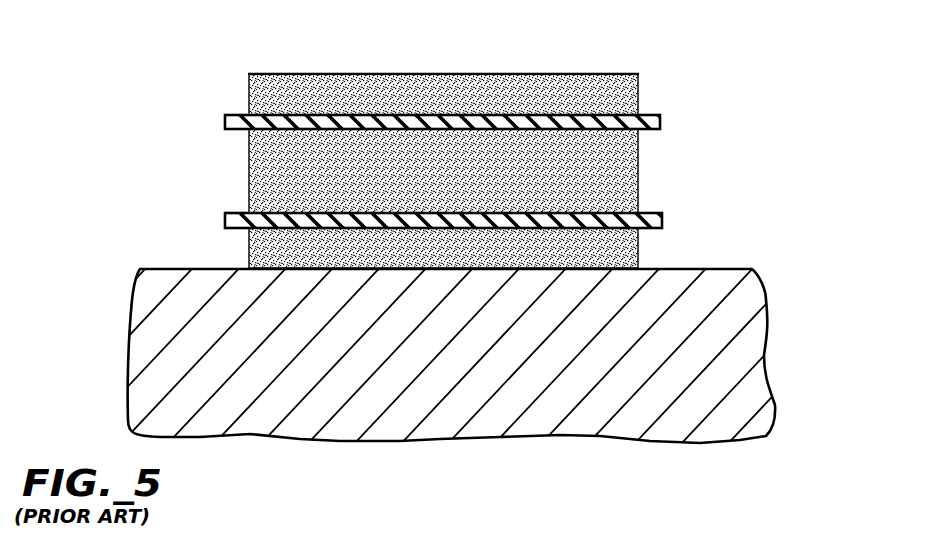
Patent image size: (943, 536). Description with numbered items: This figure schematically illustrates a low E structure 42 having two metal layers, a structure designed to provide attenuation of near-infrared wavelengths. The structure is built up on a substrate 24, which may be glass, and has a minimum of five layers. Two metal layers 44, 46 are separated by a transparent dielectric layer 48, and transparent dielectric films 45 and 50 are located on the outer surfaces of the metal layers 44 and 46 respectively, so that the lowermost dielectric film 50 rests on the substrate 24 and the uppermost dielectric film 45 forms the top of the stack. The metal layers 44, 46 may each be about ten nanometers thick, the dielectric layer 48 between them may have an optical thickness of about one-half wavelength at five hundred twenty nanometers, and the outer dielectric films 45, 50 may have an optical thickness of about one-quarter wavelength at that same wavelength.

The structure 42 is at (572, 56).
The transparent dielectric film 45 is at (639, 90).
The metal layer 44 is at (661, 125).
The transparent dielectric layer 48 is at (640, 162).
The metal layer 46 is at (663, 222).
The transparent dielectric film 50 is at (640, 259).
The substrate 24 is at (753, 336).